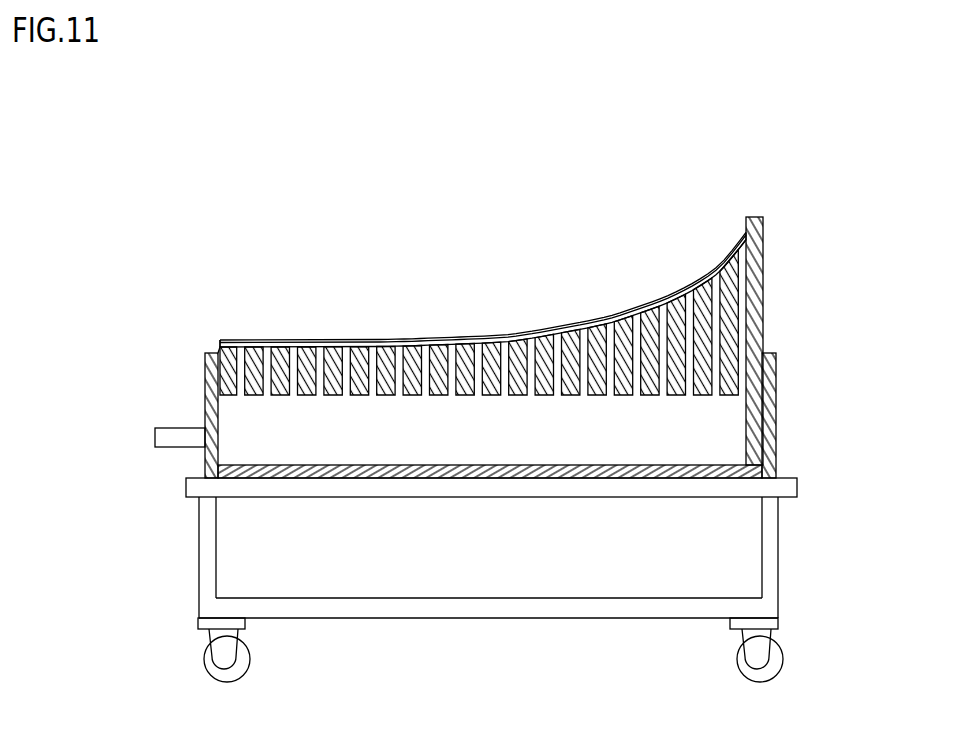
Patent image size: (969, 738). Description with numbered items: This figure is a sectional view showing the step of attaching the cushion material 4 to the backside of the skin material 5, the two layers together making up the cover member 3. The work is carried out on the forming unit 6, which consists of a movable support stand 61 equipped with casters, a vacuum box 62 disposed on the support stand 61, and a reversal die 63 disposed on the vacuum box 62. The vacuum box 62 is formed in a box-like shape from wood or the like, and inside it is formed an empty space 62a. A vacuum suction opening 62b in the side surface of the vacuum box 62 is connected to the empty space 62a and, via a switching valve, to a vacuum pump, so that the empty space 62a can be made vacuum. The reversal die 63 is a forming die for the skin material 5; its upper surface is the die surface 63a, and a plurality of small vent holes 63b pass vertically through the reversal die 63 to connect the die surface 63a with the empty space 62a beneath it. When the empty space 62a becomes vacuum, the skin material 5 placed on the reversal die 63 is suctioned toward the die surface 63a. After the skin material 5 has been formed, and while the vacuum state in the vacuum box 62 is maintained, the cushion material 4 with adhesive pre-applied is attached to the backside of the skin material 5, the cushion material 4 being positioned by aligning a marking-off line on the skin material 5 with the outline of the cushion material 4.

The cover member 3 is at (637, 213).
The cushion material 4 is at (667, 303).
The skin material 5 is at (577, 327).
The forming unit 6 is at (864, 339).
The support stand 61 is at (785, 487).
The vacuum box 62 is at (773, 400).
The empty space 62a is at (715, 464).
The vacuum suction opening 62b is at (167, 428).
The reversal die 63 is at (763, 248).
The die surface 63a is at (220, 345).
The vent holes 63b is at (712, 308).